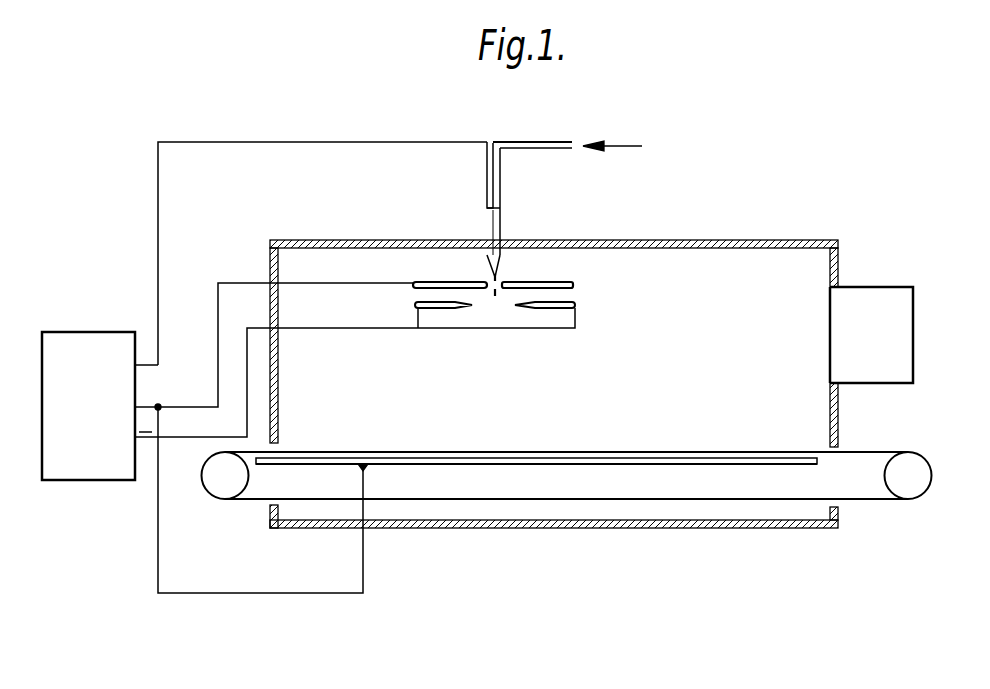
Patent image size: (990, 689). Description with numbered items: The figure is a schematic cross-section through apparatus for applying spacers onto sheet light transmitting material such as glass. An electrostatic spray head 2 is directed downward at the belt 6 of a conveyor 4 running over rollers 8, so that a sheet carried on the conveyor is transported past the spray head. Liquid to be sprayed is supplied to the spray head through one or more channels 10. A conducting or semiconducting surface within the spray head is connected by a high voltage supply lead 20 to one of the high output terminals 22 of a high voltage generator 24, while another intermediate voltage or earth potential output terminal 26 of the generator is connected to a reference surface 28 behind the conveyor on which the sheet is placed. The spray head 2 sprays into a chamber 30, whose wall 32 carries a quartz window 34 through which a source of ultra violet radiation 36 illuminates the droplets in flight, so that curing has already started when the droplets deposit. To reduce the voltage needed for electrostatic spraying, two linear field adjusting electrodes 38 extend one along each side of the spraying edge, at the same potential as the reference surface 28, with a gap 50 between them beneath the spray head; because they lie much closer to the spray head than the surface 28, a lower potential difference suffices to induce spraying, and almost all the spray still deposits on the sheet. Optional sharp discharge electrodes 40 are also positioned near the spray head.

The electrostatic spray head 2 is at (497, 229).
The conveyor 4 is at (688, 452).
The belt 6 is at (540, 450).
The rollers 8 is at (908, 460).
The channels 10 is at (570, 142).
The high voltage supply lead 20 is at (384, 140).
The high output terminal 22 is at (160, 370).
The high voltage generator 24 is at (108, 472).
The intermediate voltage or earth potential output terminal 26 is at (188, 407).
The reference surface 28 is at (783, 458).
The chamber 30 is at (635, 372).
The chamber wall 32 is at (838, 265).
The quartz window 34 is at (830, 333).
The source of ultra violet radiation 36 is at (892, 341).
The field adjusting electrodes 38 is at (441, 282).
The sharp discharge electrode 40 is at (440, 312).
The gap 50 is at (490, 293).